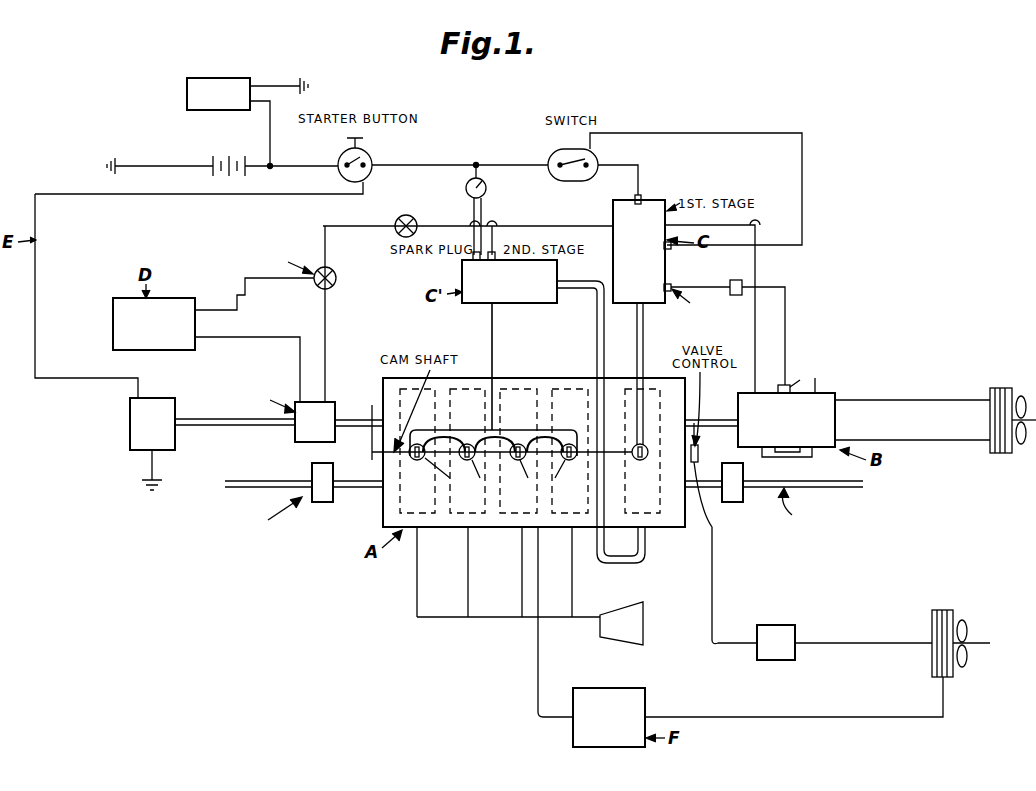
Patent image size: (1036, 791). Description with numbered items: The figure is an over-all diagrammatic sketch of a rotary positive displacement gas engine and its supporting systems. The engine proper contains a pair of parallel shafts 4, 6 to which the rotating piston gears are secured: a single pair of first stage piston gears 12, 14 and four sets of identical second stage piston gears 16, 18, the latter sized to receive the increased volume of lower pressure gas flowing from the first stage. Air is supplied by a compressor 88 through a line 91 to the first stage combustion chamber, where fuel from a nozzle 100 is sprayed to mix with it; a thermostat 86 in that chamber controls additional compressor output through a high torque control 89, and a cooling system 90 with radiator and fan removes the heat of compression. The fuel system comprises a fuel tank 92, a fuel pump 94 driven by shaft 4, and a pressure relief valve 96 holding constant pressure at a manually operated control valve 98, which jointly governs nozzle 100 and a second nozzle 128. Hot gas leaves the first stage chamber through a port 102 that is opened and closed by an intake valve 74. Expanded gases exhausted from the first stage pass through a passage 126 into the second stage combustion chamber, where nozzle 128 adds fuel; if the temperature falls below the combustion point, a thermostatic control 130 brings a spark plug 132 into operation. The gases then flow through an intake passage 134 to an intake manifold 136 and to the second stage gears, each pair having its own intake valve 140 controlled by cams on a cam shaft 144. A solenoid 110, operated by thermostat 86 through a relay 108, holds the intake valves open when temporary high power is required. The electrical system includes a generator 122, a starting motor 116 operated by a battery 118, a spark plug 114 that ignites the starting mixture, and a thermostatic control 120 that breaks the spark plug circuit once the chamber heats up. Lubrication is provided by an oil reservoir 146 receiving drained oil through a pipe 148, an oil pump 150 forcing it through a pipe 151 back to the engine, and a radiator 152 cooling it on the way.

The shaft 4 is at (350, 425).
The shaft 6 is at (368, 490).
The first stage piston gear 12 is at (636, 390).
The first stage piston gear 14 is at (683, 527).
The second stage piston gear 16 is at (398, 390).
The second stage piston gear 18 is at (540, 528).
The intake valve 74 is at (643, 460).
The thermostat 86 is at (674, 285).
The compressor 88 is at (838, 420).
The high torque control 89 is at (782, 385).
The cooling system 90 is at (990, 445).
The line 91 is at (754, 334).
The fuel tank 92 is at (118, 331).
The fuel pump 94 is at (335, 402).
The pressure relief valve 96 is at (337, 278).
The control valve 98 is at (395, 229).
The fuel injection nozzle 100 is at (612, 228).
The port 102 is at (644, 342).
The relay 108 is at (742, 285).
The solenoid 110 is at (713, 522).
The spark plug 114 is at (645, 200).
The starting motor 116 is at (132, 442).
The battery 118 is at (212, 160).
The thermostatic control 120 is at (672, 250).
The generator 122 is at (187, 90).
The passage 126 is at (606, 562).
The fuel injection nozzle 128 is at (575, 272).
The thermostatic control 130 is at (494, 250).
The spark plug 132 is at (473, 262).
The intake passage 134 is at (493, 322).
The intake manifold 136 is at (565, 438).
The intake valve 140 is at (495, 437).
The cam shaft 144 is at (598, 452).
The oil reservoir 146 is at (575, 730).
The pipe 148 is at (537, 650).
The oil pump 150 is at (784, 652).
The pipe 151 is at (714, 579).
The radiator 152 is at (938, 655).